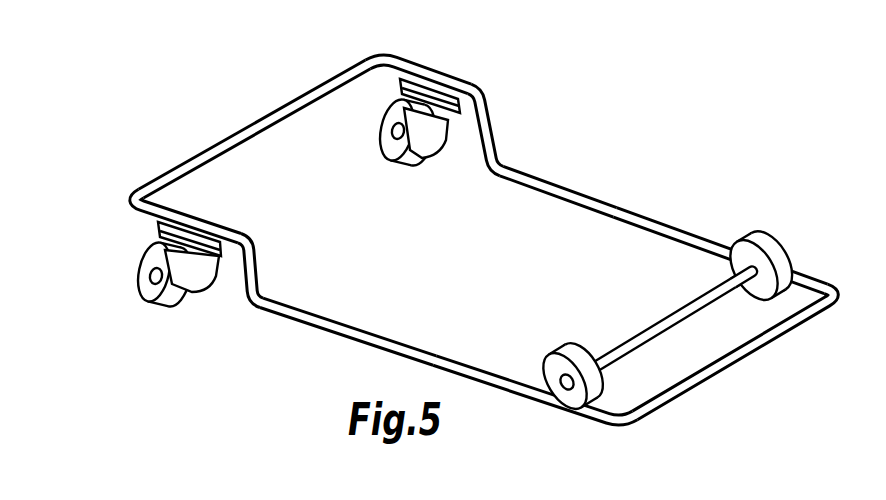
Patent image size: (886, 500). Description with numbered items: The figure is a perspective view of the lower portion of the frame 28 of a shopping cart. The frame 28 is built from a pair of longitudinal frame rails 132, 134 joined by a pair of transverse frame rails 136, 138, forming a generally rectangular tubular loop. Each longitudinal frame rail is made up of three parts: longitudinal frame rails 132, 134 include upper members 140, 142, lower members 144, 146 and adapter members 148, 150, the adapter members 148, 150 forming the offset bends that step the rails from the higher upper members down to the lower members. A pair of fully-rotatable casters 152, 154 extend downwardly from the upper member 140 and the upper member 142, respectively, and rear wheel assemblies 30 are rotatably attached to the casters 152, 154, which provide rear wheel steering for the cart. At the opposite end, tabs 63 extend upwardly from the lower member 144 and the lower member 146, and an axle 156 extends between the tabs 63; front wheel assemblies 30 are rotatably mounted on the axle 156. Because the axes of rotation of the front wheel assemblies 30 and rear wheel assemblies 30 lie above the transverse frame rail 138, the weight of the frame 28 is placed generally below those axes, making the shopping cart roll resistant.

The frame 28 is at (617, 138).
The wheel assemblies 30 is at (776, 248).
The tabs 63 is at (567, 394).
The longitudinal frame rail 132 is at (272, 311).
The longitudinal frame rail 134 is at (524, 163).
The transverse frame rail 136 is at (253, 119).
The transverse frame rail 138 is at (750, 362).
The upper member 140 is at (136, 211).
The upper member 142 is at (400, 58).
The lower member 144 is at (471, 385).
The lower member 146 is at (625, 213).
The adapter member 148 is at (262, 271).
The adapter member 150 is at (502, 140).
The caster 152 is at (208, 266).
The caster 154 is at (472, 124).
The axle 156 is at (655, 322).